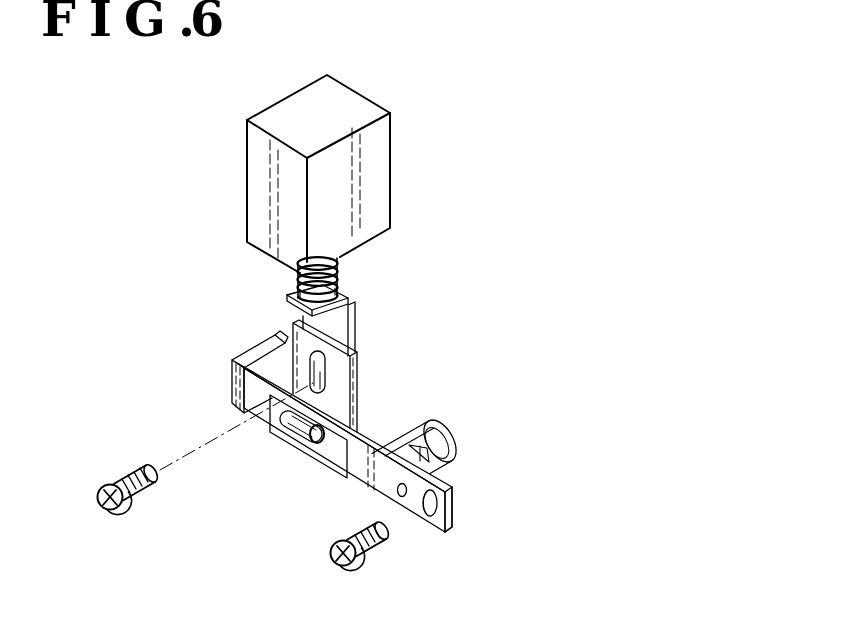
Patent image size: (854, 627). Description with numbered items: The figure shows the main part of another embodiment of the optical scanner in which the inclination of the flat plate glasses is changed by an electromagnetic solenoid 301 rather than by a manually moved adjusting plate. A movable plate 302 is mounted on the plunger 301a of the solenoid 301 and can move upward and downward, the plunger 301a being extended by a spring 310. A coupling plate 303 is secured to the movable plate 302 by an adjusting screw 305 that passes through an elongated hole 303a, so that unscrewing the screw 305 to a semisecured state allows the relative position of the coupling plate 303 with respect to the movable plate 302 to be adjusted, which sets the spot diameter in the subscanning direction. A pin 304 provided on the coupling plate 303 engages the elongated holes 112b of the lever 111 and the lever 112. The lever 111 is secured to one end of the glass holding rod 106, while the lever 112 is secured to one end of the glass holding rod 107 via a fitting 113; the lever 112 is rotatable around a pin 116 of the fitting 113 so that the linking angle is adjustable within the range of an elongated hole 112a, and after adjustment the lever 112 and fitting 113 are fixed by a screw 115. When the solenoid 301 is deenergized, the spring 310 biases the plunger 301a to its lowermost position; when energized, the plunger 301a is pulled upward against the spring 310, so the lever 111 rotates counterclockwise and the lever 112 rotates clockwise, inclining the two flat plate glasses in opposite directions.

The electromagnetic solenoid 301 is at (392, 148).
The plunger 301a is at (350, 278).
The spring 310 is at (298, 288).
The movable plate 302 is at (350, 309).
The coupling plate 303 is at (362, 386).
The elongated hole 303a is at (312, 371).
The glass holding rod 106 is at (283, 330).
The lever 111 is at (228, 393).
The lever 112 is at (370, 492).
The elongated hole 112a is at (455, 515).
The elongated hole 112b is at (288, 441).
The fitting 113 is at (460, 497).
The pin 116 is at (403, 498).
The pin 304 is at (316, 460).
The glass holding rod 107 is at (436, 420).
The adjusting screw 305 is at (100, 484).
The screw 115 is at (334, 562).